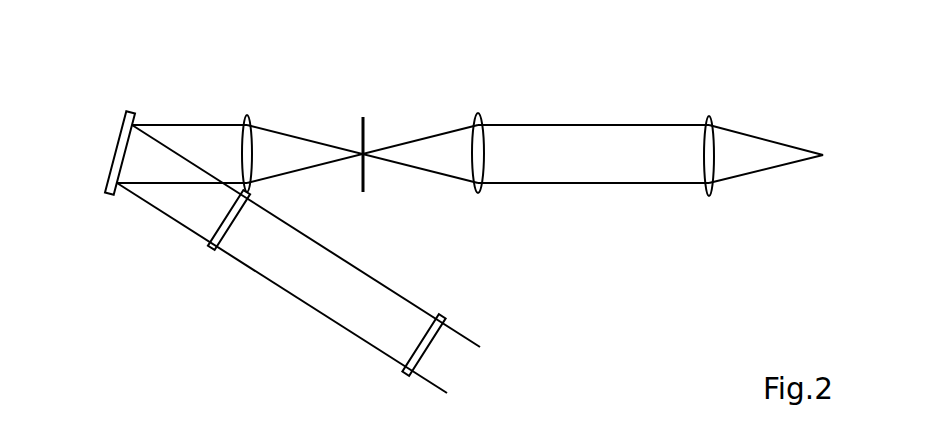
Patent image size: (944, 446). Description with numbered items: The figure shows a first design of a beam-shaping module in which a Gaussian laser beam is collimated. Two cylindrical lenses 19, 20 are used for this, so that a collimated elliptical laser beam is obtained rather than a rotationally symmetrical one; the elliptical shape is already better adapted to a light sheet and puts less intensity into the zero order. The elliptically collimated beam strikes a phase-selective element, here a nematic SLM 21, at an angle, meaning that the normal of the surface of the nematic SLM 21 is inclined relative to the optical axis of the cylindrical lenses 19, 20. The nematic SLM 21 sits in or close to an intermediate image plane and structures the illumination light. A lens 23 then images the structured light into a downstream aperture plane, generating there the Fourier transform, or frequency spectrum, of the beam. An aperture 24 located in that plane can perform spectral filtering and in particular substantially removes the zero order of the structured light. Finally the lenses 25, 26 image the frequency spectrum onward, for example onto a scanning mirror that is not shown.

The cylindrical lens 19 is at (405, 373).
The cylindrical lens 20 is at (208, 248).
The nematic SLM 21 is at (134, 114).
The lens 23 is at (252, 114).
The aperture 24 is at (365, 117).
The lens 25 is at (480, 113).
The lens 26 is at (712, 117).